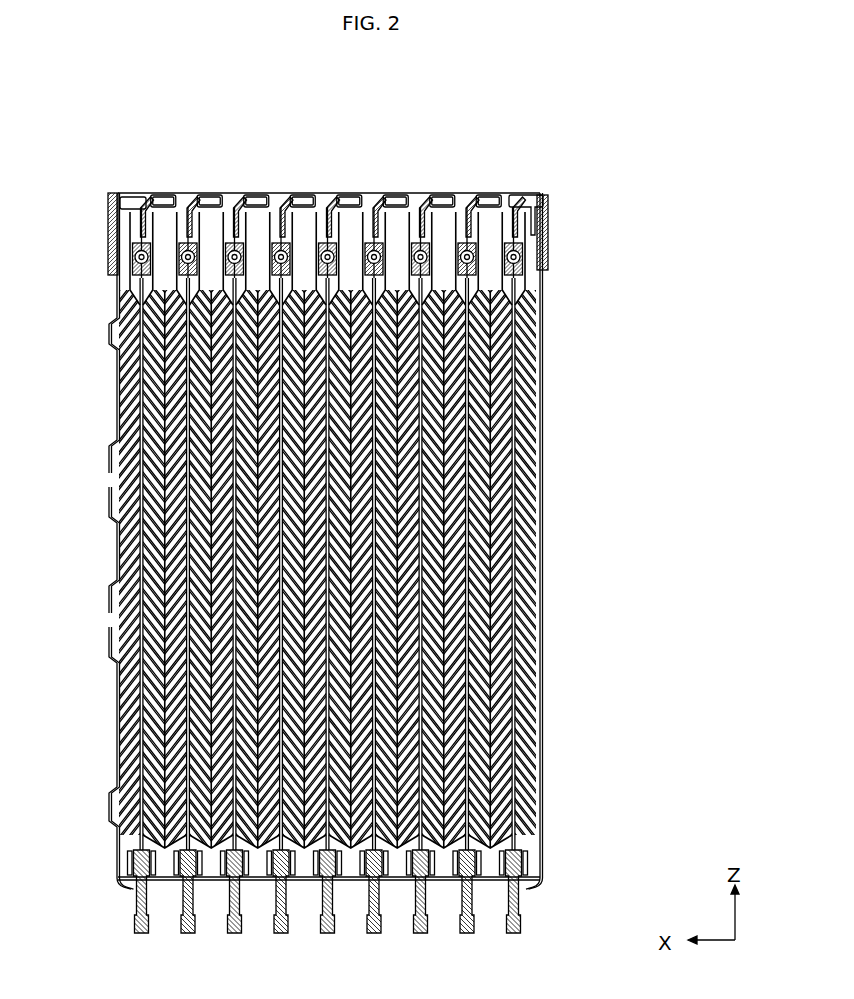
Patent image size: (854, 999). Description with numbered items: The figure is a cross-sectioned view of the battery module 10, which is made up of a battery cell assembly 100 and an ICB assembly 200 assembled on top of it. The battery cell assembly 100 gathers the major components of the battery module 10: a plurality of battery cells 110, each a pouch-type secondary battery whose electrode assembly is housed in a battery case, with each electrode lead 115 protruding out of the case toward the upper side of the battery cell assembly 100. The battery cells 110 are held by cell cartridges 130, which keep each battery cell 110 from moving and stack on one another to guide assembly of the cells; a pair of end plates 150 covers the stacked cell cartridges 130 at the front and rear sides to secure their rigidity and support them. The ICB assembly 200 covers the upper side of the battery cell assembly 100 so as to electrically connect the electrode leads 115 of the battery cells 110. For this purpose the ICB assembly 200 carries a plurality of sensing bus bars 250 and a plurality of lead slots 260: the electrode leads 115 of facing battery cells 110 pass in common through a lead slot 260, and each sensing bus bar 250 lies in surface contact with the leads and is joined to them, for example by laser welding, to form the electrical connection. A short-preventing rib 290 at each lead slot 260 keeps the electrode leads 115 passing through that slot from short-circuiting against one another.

The battery module 10 is at (103, 109).
The battery cell assembly 100 is at (66, 573).
The battery cell 110 is at (505, 383).
The electrode lead 115 is at (230, 196).
The cell cartridge 130 is at (133, 863).
The end plate 150 is at (541, 453).
The ICB assembly 200 is at (490, 156).
The sensing bus bar 250 is at (208, 196).
The lead slot 260 is at (240, 198).
The short-preventing rib 290 is at (187, 203).